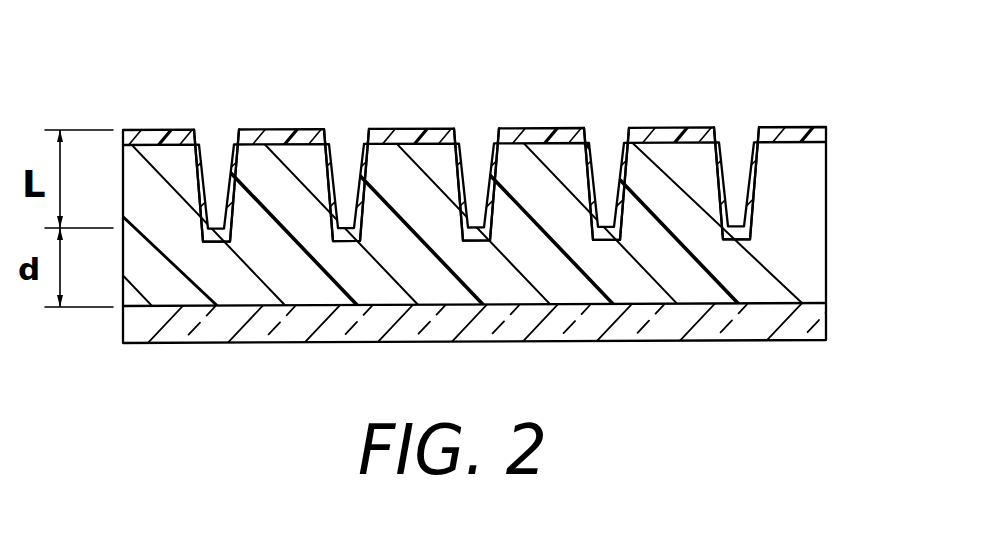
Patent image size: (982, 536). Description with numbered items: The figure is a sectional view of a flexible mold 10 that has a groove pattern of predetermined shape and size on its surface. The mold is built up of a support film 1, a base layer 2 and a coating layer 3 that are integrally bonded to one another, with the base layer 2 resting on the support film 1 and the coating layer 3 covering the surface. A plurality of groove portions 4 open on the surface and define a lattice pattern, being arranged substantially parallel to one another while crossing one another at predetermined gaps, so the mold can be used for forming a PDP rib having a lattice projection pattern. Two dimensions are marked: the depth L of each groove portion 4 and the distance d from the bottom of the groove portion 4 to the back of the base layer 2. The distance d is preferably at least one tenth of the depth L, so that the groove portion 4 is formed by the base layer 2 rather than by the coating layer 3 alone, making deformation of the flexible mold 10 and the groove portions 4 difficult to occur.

The support film 1 is at (808, 327).
The base layer 2 is at (812, 203).
The coating layer 3 is at (783, 134).
The groove portions 4 is at (602, 147).
The flexible mold 10 is at (186, 76).